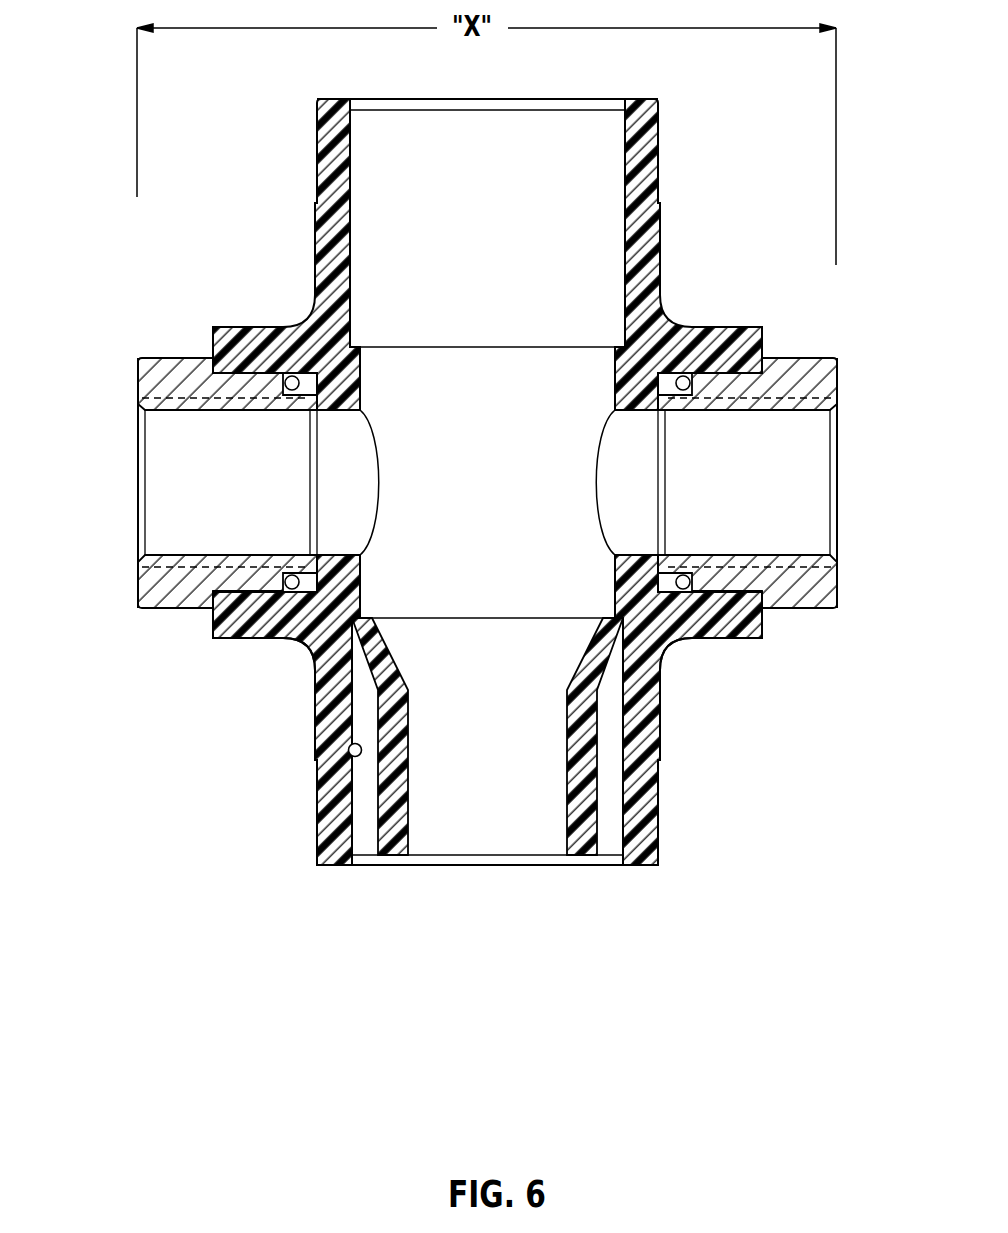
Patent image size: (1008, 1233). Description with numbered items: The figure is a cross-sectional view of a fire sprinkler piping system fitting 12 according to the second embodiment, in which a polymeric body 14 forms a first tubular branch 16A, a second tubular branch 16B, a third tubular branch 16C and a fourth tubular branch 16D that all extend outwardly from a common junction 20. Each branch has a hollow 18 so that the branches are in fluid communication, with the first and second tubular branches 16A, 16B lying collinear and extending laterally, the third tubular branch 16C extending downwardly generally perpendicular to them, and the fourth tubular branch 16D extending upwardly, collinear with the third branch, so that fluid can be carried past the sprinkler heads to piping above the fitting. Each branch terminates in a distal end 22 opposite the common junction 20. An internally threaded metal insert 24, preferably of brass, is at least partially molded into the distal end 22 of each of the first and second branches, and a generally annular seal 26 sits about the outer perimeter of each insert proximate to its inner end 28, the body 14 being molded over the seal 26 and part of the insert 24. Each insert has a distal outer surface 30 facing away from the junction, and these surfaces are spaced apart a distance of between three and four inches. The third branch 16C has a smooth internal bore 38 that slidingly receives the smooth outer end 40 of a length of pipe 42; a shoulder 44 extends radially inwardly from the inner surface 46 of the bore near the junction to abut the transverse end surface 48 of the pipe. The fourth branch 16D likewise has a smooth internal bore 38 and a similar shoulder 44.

The fire sprinkler piping system fitting 12 is at (270, 866).
The polymeric body 14 is at (262, 327).
The first tubular branch 16A is at (213, 327).
The second tubular branch 16B is at (762, 327).
The third tubular branch 16C is at (661, 815).
The fourth tubular branch 16D is at (660, 140).
The hollow 18 is at (214, 495).
The common junction 20 is at (476, 509).
The distal end 22 is at (768, 340).
The internally threaded metal insert 24 is at (152, 578).
The seal 26 is at (292, 376).
The inner end 28 is at (323, 408).
The distal outer surface 30 is at (138, 372).
The smooth internal bore 38 is at (466, 217).
The smooth outer end 40 is at (367, 612).
The length of pipe 42 is at (410, 838).
The shoulder 44 is at (616, 352).
The inner surface 46 is at (349, 752).
The transverse end surface 48 is at (315, 655).